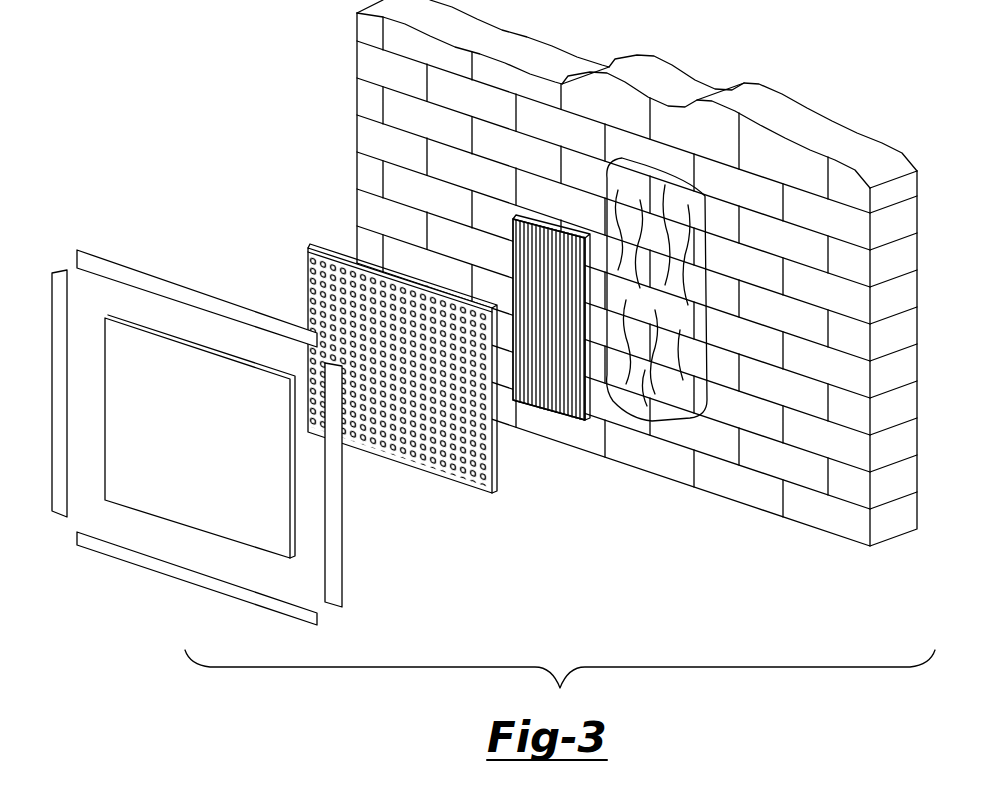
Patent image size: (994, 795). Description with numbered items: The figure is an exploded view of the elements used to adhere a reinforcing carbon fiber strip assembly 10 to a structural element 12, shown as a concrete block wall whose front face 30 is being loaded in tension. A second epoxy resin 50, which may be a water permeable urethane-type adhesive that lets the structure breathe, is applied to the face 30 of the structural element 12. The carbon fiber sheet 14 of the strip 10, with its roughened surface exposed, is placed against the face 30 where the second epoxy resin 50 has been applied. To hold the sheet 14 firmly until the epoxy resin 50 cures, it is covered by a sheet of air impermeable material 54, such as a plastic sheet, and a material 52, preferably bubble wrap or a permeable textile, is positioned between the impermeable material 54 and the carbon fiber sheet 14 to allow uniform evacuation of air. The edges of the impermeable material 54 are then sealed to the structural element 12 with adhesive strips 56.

The carbon fiber strip assembly 10 is at (503, 257).
The structural element 12 is at (577, 273).
The carbon fiber sheet 14 is at (558, 404).
The face 30 is at (428, 151).
The second epoxy resin 50 is at (662, 405).
The material 52 is at (307, 280).
The sheet of air impermeable material 54 is at (115, 358).
The adhesive strips 56 is at (90, 258).